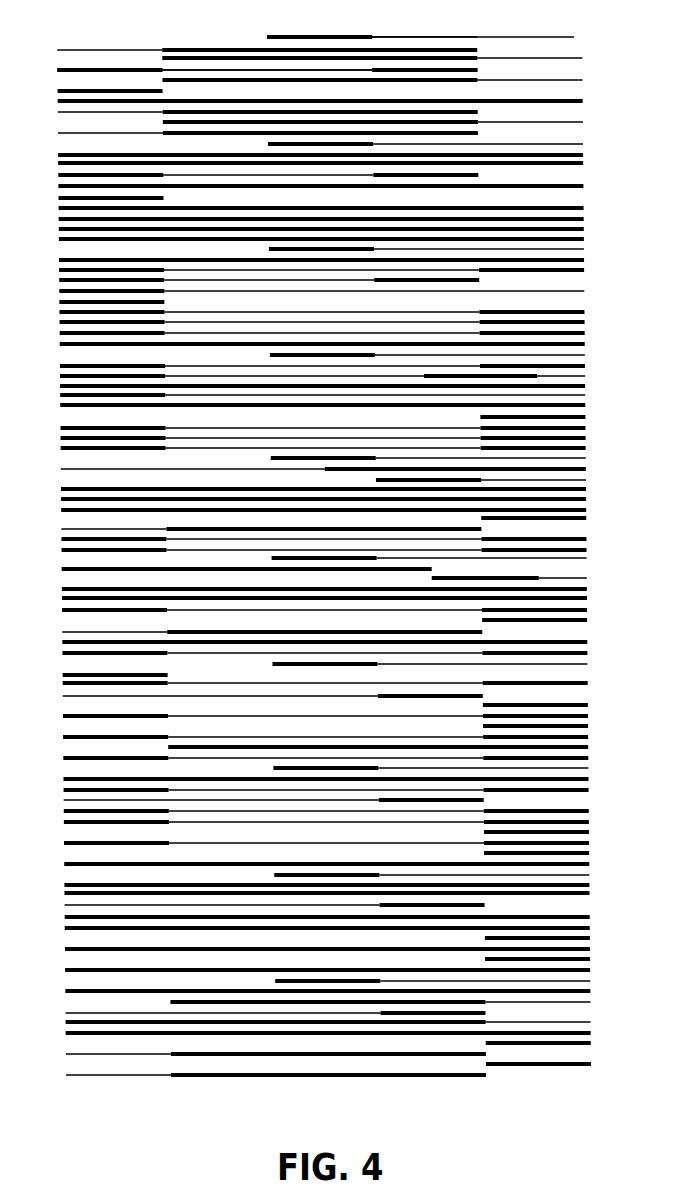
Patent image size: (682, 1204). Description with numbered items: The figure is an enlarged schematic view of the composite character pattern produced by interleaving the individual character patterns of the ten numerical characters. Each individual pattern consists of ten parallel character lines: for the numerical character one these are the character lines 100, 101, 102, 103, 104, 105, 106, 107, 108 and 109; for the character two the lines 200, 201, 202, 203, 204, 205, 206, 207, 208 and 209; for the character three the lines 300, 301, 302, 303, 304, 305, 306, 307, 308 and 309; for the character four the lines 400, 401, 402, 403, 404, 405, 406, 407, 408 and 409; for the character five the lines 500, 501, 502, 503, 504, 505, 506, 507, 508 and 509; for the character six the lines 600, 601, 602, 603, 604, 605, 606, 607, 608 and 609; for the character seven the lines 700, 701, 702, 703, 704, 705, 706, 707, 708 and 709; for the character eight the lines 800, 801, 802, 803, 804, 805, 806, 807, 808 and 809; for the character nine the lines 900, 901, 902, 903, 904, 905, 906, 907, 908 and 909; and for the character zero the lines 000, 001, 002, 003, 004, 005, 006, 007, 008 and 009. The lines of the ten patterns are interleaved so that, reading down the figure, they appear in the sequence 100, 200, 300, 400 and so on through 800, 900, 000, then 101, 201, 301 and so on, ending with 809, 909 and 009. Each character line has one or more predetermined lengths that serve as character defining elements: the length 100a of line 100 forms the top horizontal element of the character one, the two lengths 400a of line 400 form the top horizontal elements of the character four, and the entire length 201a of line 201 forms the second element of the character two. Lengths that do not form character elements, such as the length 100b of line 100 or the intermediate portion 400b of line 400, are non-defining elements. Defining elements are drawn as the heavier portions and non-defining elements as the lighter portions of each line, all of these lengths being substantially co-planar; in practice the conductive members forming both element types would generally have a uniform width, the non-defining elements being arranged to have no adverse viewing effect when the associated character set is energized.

The character line 100 is at (575, 37).
The predetermined length 100a is at (327, 37).
The non-defining length 100b is at (425, 37).
The character line 200 is at (58, 50).
The character line 300 is at (583, 58).
The character line 400 is at (58, 70).
The predetermined lengths 400a is at (117, 70).
The pulse portion 400b is at (171, 70).
The character line 500 is at (583, 80).
The character line 600 is at (58, 91).
The character line 700 is at (583, 101).
The character line 800 is at (58, 112).
The character line 900 is at (583, 122).
The character line 000 is at (58, 133).
The character line 101 is at (583, 144).
The character line 201 is at (58, 155).
The entire length 201a is at (214, 155).
The character line 301 is at (583, 163).
The character line 401 is at (58, 175).
The character line 501 is at (583, 186).
The character line 601 is at (58, 198).
The character line 701 is at (583, 208).
The character line 801 is at (58, 219).
The character line 901 is at (583, 229).
The character line 001 is at (58, 239).
The character line 102 is at (583, 249).
The character line 202 is at (58, 260).
The character line 302 is at (583, 270).
The character line 402 is at (58, 280).
The character line 502 is at (583, 291).
The character line 602 is at (58, 302).
The character line 702 is at (583, 312).
The character line 802 is at (58, 322).
The character line 902 is at (583, 333).
The character line 002 is at (58, 344).
The character line 103 is at (583, 355).
The character line 203 is at (58, 366).
The character line 303 is at (583, 376).
The character line 403 is at (58, 386).
The character line 503 is at (583, 395).
The character line 603 is at (58, 405).
The character line 703 is at (583, 417).
The character line 803 is at (58, 428).
The character line 903 is at (583, 438).
The character line 003 is at (58, 448).
The character line 104 is at (583, 458).
The character line 204 is at (58, 469).
The character line 304 is at (583, 480).
The character line 404 is at (58, 489).
The character line 504 is at (583, 499).
The character line 604 is at (58, 510).
The character line 704 is at (583, 518).
The character line 804 is at (58, 529).
The character line 904 is at (583, 539).
The character line 004 is at (58, 550).
The character line 105 is at (583, 558).
The character line 205 is at (58, 569).
The character line 305 is at (583, 578).
The character line 405 is at (58, 589).
The character line 505 is at (583, 598).
The character line 605 is at (58, 610).
The character line 705 is at (583, 620).
The character line 805 is at (58, 632).
The character line 905 is at (583, 642).
The character line 005 is at (58, 653).
The character line 106 is at (583, 664).
The character line 206 is at (58, 675).
The character line 306 is at (583, 683).
The character line 406 is at (58, 696).
The character line 506 is at (583, 705).
The character line 606 is at (58, 716).
The character line 706 is at (583, 726).
The character line 806 is at (58, 737).
The character line 906 is at (583, 747).
The character line 006 is at (58, 758).
The character line 107 is at (583, 768).
The character line 207 is at (58, 779).
The character line 307 is at (583, 790).
The character line 407 is at (58, 800).
The character line 507 is at (583, 811).
The character line 607 is at (58, 822).
The character line 707 is at (583, 832).
The character line 807 is at (58, 843).
The character line 907 is at (583, 853).
The character line 007 is at (58, 864).
The character line 108 is at (583, 875).
The character line 208 is at (58, 885).
The character line 308 is at (583, 893).
The character line 408 is at (58, 905).
The character line 508 is at (583, 917).
The character line 608 is at (58, 928).
The character line 708 is at (583, 938).
The character line 808 is at (58, 949).
The character line 908 is at (583, 959).
The character line 008 is at (58, 970).
The character line 109 is at (583, 981).
The character line 209 is at (58, 991).
The character line 309 is at (583, 1002).
The character line 409 is at (58, 1013).
The character line 509 is at (583, 1022).
The character line 609 is at (58, 1033).
The character line 709 is at (583, 1043).
The character line 809 is at (58, 1054).
The character line 909 is at (583, 1064).
The character line 009 is at (58, 1075).